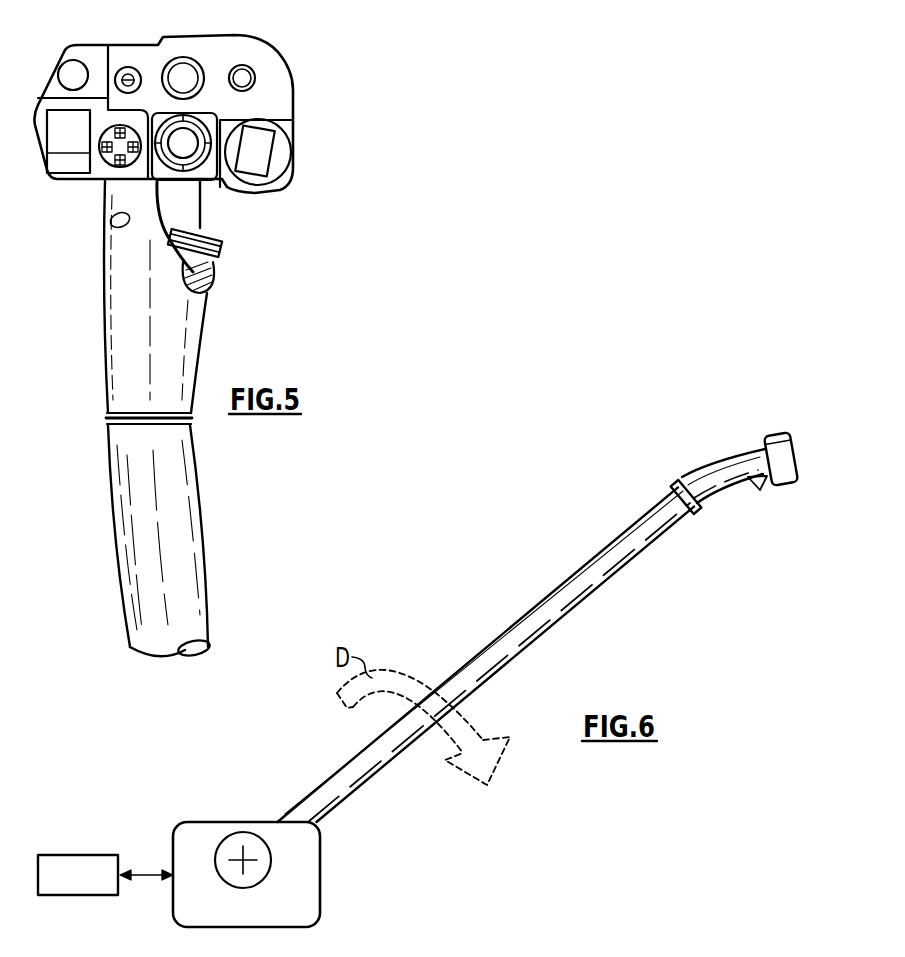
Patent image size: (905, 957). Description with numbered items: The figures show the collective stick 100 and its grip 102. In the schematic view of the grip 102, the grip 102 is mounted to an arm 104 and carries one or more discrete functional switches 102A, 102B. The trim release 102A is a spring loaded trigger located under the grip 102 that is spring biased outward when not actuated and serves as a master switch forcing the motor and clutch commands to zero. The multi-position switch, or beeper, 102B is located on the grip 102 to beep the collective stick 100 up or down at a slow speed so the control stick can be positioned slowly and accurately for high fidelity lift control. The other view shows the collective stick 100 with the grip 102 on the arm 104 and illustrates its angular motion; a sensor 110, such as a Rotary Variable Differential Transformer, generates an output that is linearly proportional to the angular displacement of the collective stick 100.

In FIG. 6, the collective stick 100 is at (552, 624).
In FIG. 5, the grip 102 is at (363, 183).
In FIG. 6, the grip 102 is at (720, 458).
In FIG. 5, the trim release 102A is at (216, 210).
In FIG. 6, the trim release 102A is at (760, 489).
In FIG. 5, the multi-position switch (beeper) 102B is at (105, 165).
In FIG. 5, the arm 104 is at (182, 527).
In FIG. 6, the arm 104 is at (511, 626).
In FIG. 6, the sensor 110 is at (82, 895).